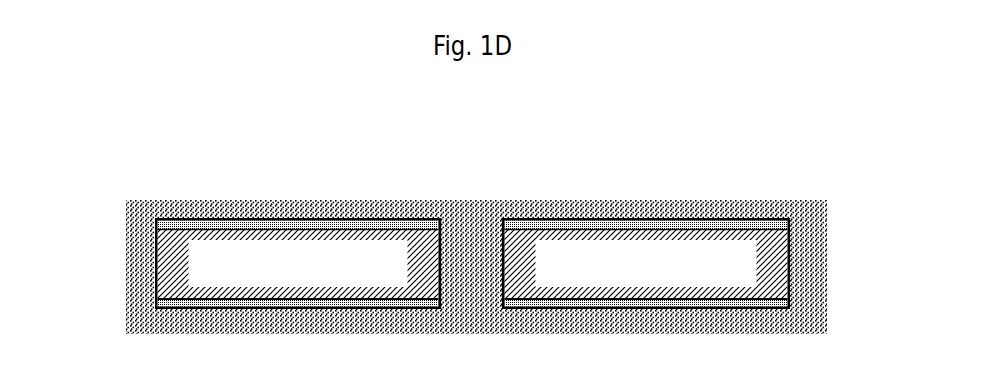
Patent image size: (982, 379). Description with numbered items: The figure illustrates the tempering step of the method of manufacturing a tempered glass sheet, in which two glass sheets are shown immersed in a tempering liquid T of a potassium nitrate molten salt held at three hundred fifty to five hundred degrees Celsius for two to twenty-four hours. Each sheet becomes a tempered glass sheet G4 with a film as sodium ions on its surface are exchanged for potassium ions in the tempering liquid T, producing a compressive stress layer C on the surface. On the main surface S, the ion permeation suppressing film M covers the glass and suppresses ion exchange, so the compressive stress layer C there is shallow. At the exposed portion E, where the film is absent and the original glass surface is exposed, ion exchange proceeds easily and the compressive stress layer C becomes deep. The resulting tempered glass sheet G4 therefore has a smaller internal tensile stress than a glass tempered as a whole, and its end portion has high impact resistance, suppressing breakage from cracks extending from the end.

The tempering liquid T is at (812, 200).
The tempered glass sheet G4 is at (178, 191).
The ion permeation suppressing film M is at (330, 220).
The main surface S is at (258, 229).
The compressive stress layer C is at (427, 243).
The exposed portion E is at (146, 300).